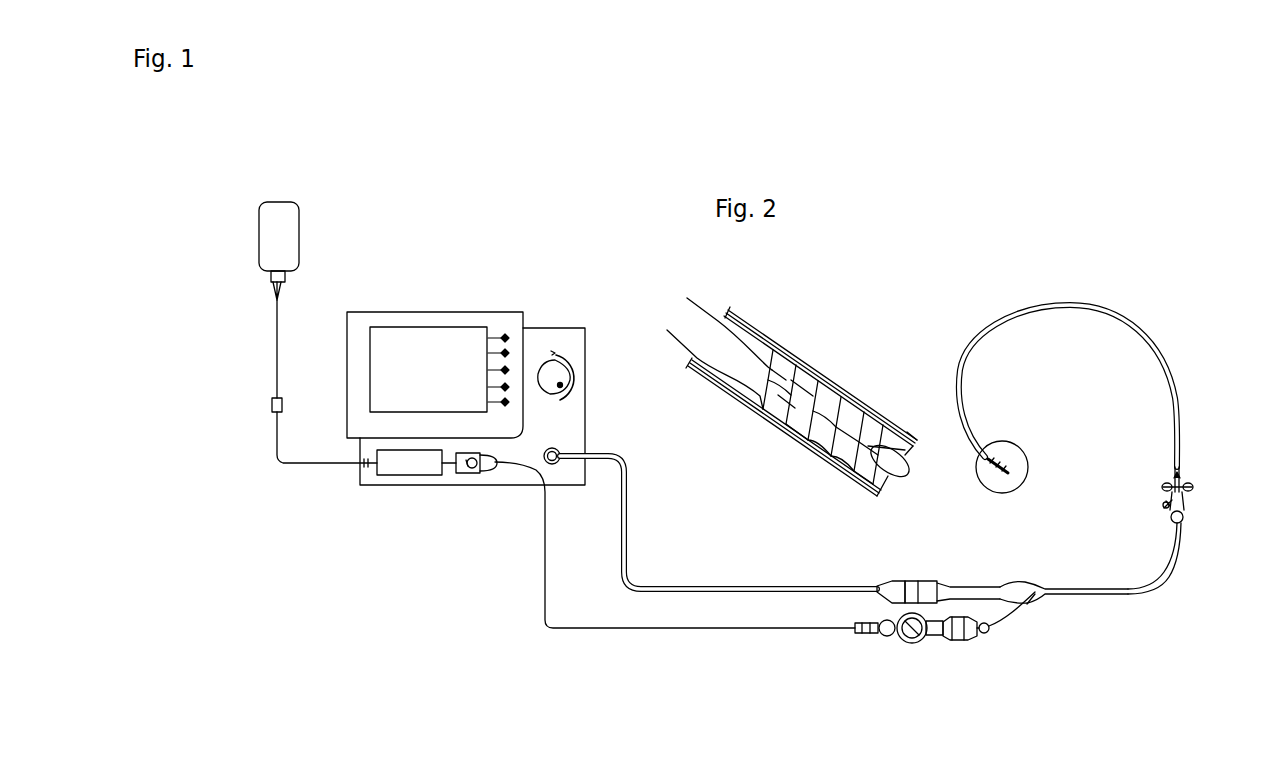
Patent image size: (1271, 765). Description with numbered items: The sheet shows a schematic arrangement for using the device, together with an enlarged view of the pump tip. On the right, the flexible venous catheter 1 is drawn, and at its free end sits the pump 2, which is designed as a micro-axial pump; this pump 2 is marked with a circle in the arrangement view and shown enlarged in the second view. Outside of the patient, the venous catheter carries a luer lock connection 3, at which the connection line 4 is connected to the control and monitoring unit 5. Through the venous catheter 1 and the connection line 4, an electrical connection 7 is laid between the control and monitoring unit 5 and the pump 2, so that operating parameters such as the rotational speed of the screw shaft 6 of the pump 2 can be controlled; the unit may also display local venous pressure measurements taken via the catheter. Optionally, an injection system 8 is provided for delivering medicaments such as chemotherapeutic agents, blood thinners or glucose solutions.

In FIG. 1, the venous catheter 1 is at (1078, 303).
In FIG. 1, the pump 2 is at (1028, 457).
In FIG. 2, the pump 2 is at (812, 372).
In FIG. 1, the luer lock connection 3 is at (1190, 502).
In FIG. 1, the connection line 4 is at (772, 588).
In FIG. 1, the control and monitoring unit 5 is at (455, 310).
In FIG. 2, the screw shaft 6 is at (852, 408).
In FIG. 2, the electrical connection 7 is at (698, 338).
In FIG. 1, the injection system 8 is at (735, 630).